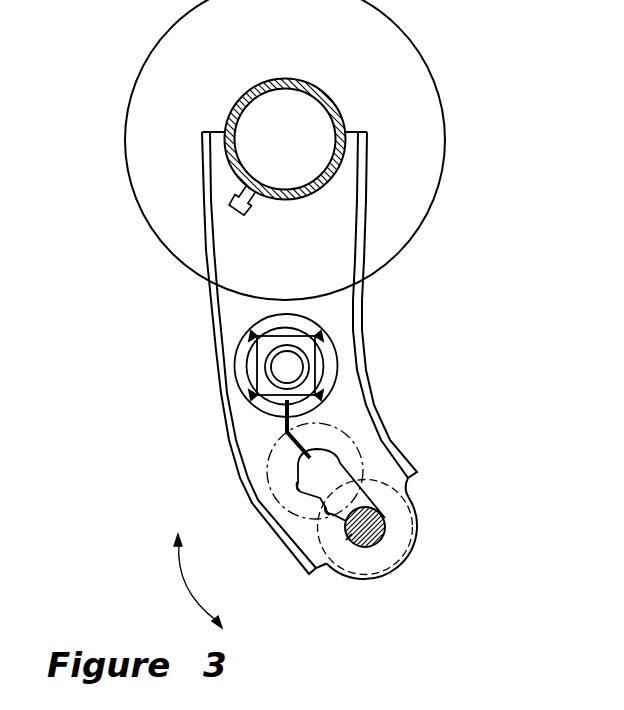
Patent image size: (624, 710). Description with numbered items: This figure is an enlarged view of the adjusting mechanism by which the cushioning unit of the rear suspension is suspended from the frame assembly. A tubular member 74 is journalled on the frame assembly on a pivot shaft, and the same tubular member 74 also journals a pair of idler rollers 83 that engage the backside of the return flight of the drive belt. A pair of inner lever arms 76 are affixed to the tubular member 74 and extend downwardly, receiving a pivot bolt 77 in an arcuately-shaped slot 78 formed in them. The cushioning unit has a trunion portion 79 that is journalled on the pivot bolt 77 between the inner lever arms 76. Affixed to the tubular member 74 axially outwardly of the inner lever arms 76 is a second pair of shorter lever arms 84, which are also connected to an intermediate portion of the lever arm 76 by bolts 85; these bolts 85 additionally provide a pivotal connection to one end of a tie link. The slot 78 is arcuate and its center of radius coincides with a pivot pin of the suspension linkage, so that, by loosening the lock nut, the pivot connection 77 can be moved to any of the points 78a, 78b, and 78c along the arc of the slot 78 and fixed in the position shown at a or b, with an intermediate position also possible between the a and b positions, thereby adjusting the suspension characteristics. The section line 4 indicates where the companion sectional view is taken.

The idler rollers 83 is at (430, 72).
The tubular member 74 is at (337, 109).
The second pair of lever arms 84 is at (237, 293).
The inner lever arms 76 is at (225, 393).
The bolts 85 is at (293, 363).
The arcuately-shaped slot 78 is at (332, 460).
The point along slot 78a is at (302, 488).
The point along slot 78b is at (326, 511).
The point along slot 78c is at (347, 540).
The trunion portion 79 is at (398, 495).
The pivot bolt 77 is at (385, 520).
The position a is at (297, 475).
The position b is at (358, 552).
The section line 4- 4 is at (283, 17).